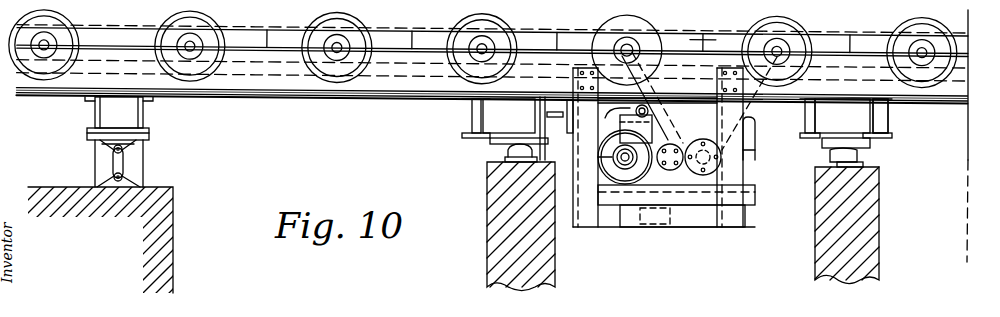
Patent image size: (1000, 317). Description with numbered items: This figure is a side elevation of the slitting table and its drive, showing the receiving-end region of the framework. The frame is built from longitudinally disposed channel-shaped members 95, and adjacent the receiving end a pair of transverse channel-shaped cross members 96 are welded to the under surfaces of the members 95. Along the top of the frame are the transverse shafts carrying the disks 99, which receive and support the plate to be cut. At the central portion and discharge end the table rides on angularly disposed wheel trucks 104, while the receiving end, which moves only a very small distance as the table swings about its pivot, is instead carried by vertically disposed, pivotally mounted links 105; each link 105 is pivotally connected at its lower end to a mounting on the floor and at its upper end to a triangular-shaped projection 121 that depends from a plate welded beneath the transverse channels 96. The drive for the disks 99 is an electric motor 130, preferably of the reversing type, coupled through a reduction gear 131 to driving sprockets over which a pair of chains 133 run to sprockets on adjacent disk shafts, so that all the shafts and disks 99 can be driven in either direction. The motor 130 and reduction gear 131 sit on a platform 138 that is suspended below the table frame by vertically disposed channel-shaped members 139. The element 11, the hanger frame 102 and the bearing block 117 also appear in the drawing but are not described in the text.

The track rail 11 is at (786, 26).
The channel-shaped members 95 is at (417, 84).
The channel-shaped cross members 96 is at (137, 106).
The disks 99 is at (170, 27).
The hanger frame 102 is at (846, 118).
The wheel trucks 104 is at (463, 120).
The links 105 is at (124, 164).
The bearing block 117 is at (858, 155).
The triangular-shaped projection 121 is at (106, 143).
The electric motor 130 is at (687, 168).
The reduction gear 131 is at (775, 142).
The chains 133 is at (688, 36).
The platform 138 is at (684, 228).
The channel-shaped members 139 is at (585, 218).